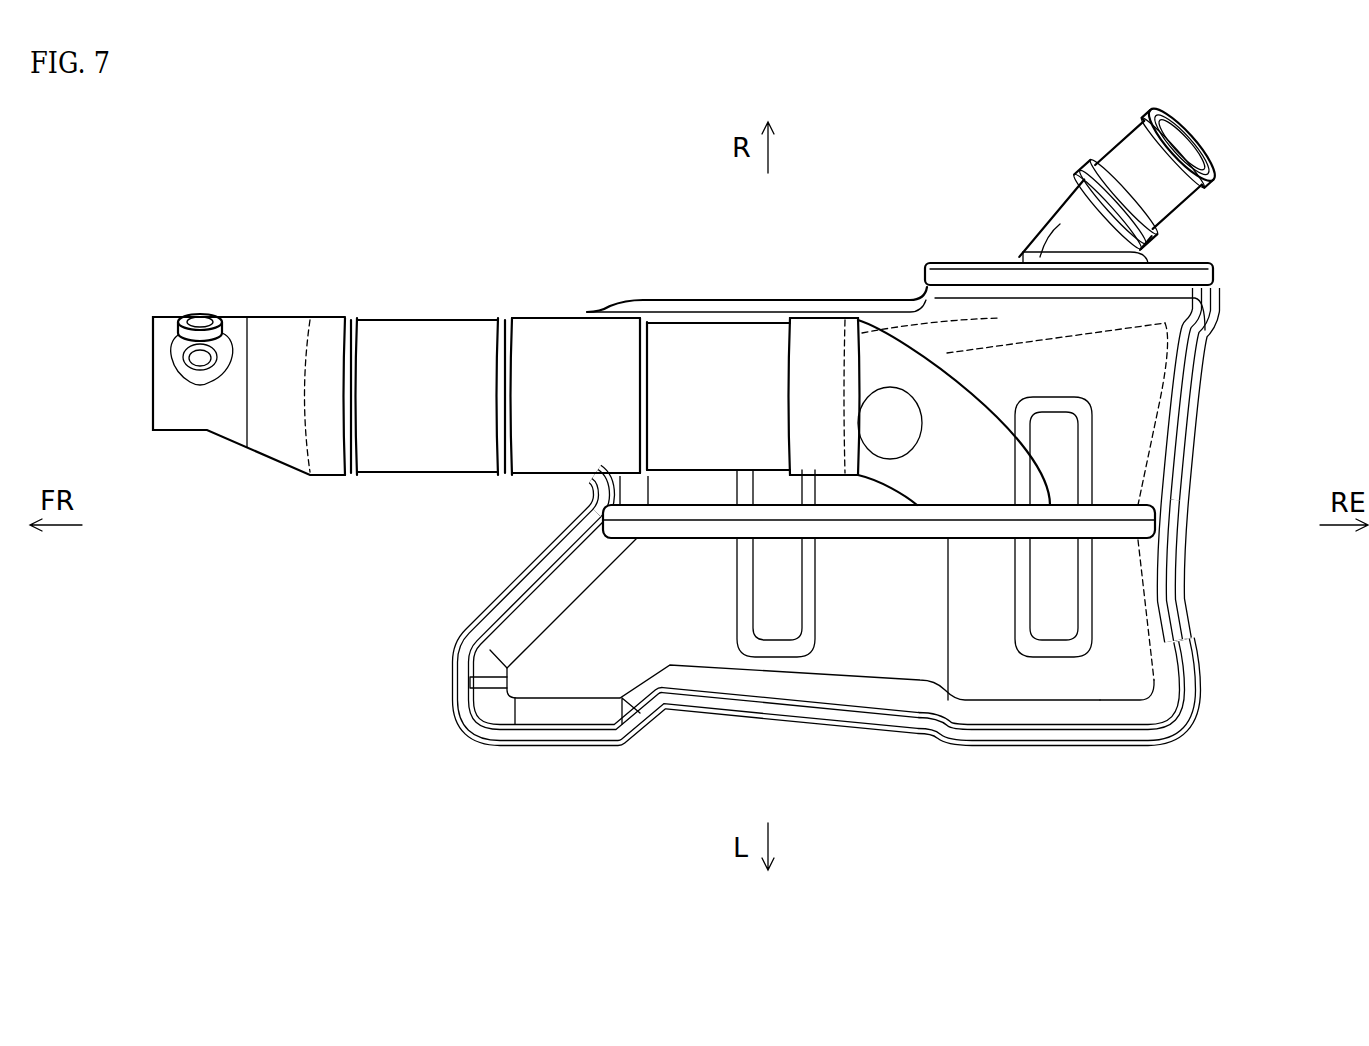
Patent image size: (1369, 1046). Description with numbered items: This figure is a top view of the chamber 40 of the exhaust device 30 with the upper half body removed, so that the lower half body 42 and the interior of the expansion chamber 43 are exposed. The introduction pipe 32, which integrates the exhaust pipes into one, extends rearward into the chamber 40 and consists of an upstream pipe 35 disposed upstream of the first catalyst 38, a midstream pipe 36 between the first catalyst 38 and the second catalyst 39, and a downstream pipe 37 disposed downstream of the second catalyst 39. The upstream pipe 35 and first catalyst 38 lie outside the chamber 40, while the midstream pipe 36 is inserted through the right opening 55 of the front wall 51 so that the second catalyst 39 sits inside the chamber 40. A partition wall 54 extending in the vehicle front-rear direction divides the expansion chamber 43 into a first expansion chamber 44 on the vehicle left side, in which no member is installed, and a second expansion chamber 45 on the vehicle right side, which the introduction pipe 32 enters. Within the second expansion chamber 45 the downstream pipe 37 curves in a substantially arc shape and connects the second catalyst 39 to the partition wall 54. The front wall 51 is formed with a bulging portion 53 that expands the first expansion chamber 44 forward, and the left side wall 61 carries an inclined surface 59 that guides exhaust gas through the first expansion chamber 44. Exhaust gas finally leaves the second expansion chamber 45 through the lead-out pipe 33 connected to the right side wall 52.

The exhaust device 30 is at (557, 146).
The introduction pipe 32 is at (493, 264).
The lead-out pipe 33 is at (1117, 155).
The upstream pipe 35 is at (280, 333).
The midstream pipe 36 is at (565, 330).
The downstream pipe 37 is at (832, 333).
The first catalyst 38 is at (418, 333).
The second catalyst 39 is at (710, 328).
The chamber 40 is at (1262, 303).
The lower half body 42 is at (1200, 698).
The expansion chamber 43 is at (1263, 418).
The first expansion chamber 44 is at (1125, 582).
The second expansion chamber 45 is at (1133, 450).
The front wall 51 is at (570, 533).
The right side wall 52 is at (871, 296).
The bulging portion 53 is at (467, 730).
The partition wall 54 is at (1062, 500).
The right opening 55 is at (585, 462).
The inclined surface 59 is at (842, 693).
The left side wall 61 is at (808, 720).